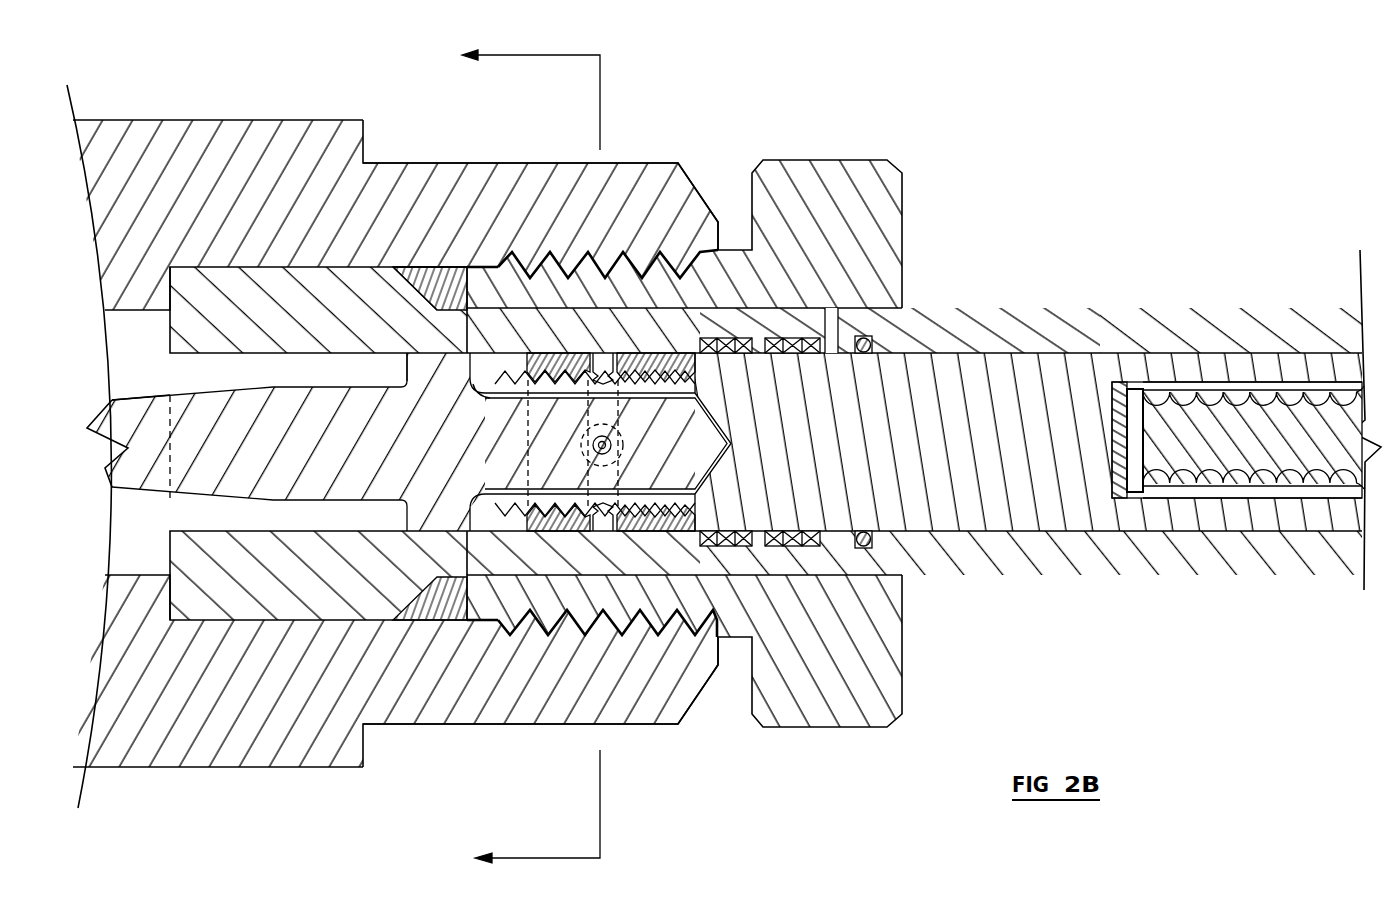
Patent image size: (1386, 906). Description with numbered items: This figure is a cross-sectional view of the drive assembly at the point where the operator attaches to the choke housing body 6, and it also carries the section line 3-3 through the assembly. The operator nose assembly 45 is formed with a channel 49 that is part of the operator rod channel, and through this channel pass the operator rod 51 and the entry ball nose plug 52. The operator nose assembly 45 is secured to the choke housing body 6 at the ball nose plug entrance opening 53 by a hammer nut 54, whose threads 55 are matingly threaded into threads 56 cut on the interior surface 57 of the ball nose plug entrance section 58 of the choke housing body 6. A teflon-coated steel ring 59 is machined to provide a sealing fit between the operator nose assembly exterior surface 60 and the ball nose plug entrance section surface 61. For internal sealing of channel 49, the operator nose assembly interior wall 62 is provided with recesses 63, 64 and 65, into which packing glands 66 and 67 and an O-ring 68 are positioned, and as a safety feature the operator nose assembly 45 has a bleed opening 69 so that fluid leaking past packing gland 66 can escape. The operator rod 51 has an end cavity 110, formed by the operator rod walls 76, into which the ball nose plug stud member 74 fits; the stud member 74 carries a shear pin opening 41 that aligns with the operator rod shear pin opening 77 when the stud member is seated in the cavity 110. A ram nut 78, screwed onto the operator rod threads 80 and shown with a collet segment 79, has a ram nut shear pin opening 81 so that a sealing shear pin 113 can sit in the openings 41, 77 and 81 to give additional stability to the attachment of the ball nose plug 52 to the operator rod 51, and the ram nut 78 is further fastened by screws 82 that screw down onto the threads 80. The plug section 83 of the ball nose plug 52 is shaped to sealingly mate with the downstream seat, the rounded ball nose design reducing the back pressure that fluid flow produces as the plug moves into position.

The section line 3- 3 is at (516, 460).
The choke housing body 6 is at (185, 109).
The shear pin opening 41 is at (597, 456).
The operator nose assembly 45 is at (267, 330).
The channel 49 is at (259, 509).
The operator rod 51 is at (860, 471).
The ball nose plug 52 is at (141, 454).
The ball nose plug entrance opening 53 is at (172, 376).
The hammer nut 54 is at (790, 175).
The threads 55 is at (622, 254).
The threads 56 is at (617, 272).
The interior surface 57 is at (518, 266).
The ball nose plug entrance section 58 is at (625, 172).
The teflon-coated steel ring 59 is at (453, 297).
The operator nose assembly exterior surface 60 is at (423, 282).
The ball nose plug entrance section surface 61 is at (440, 270).
The operator nose assembly interior wall 62 is at (412, 356).
The recess 63 is at (718, 358).
The recess 64 is at (785, 358).
The recess 65 is at (865, 358).
The packing gland 66 is at (703, 340).
The packing gland 67 is at (769, 340).
The O-ring 68 is at (862, 337).
The bleed opening 69 is at (834, 315).
The ball nose plug stud member 74 is at (578, 432).
The operator rod walls 76 is at (478, 399).
The operator rod shear pin opening 77 is at (607, 455).
The ram nut 78 is at (655, 355).
The collet segment 79 is at (697, 498).
The operator rod threads 80 is at (508, 528).
The ram nut shear pin opening 81 is at (596, 437).
The screws 82 is at (601, 356).
The plug section 83 is at (140, 413).
The end cavity 110 is at (497, 467).
The sealing shear pin 113 is at (610, 444).